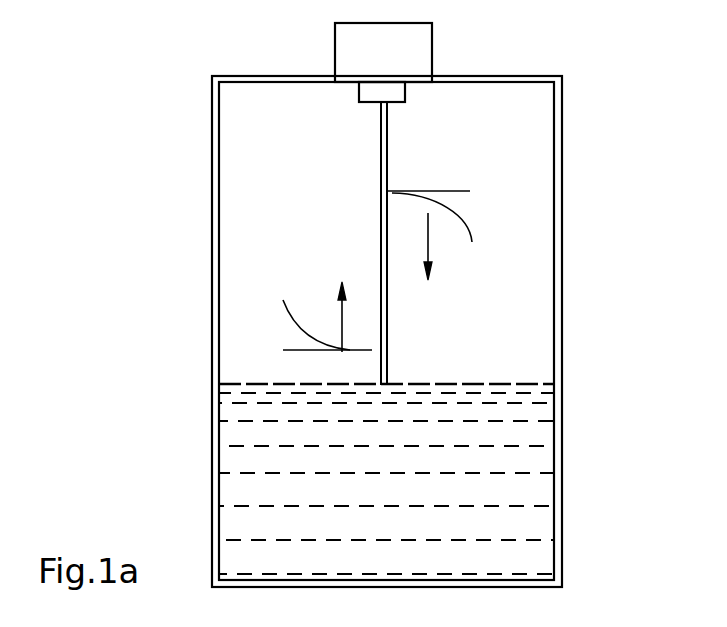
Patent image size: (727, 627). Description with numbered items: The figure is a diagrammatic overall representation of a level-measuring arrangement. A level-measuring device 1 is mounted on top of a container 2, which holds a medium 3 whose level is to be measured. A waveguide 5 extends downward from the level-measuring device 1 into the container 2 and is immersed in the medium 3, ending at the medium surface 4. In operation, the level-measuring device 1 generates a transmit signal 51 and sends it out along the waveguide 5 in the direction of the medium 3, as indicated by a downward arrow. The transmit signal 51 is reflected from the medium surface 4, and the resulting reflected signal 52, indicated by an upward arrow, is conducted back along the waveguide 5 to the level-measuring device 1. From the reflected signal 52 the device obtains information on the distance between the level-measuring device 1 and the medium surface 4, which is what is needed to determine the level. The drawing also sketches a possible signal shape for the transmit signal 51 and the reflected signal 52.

The level-measuring device 1 is at (424, 45).
The container 2 is at (562, 224).
The medium 3 is at (533, 496).
The medium surface 4 is at (514, 382).
The waveguide 5 is at (388, 148).
The transmit signal 51 is at (428, 232).
The reflected signal 52 is at (342, 305).